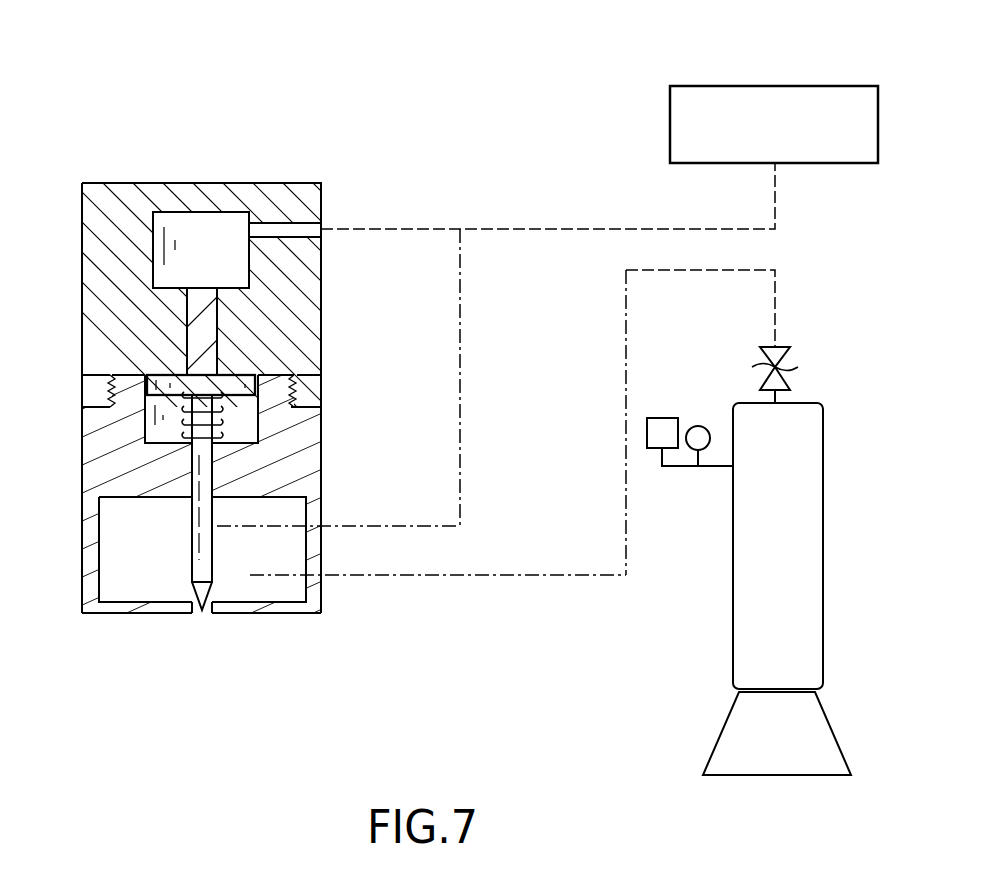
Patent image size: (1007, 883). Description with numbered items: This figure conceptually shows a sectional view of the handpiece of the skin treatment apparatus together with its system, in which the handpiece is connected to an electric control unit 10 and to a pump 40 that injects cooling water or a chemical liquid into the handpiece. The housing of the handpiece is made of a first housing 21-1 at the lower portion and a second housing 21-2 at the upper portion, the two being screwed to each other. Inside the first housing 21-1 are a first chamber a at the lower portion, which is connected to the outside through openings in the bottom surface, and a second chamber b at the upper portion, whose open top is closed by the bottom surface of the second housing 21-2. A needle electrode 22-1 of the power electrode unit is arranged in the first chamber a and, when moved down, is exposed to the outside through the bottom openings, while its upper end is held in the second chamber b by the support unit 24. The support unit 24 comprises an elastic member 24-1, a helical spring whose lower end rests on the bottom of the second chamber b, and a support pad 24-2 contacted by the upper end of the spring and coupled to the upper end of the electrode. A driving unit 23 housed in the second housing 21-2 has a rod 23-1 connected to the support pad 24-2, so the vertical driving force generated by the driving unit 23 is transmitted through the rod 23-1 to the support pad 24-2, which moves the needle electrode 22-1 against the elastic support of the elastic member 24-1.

The electric control unit 10 is at (678, 86).
The first housing 21-1 is at (97, 437).
The second housing 21-2 is at (92, 350).
The needle electrode 22-1 is at (208, 563).
The driving unit 23 is at (199, 220).
The rod 23-1 is at (207, 342).
The support unit 24 is at (290, 445).
The elastic member 24-1 is at (215, 428).
The support pad 24-2 is at (253, 390).
The pump 40 is at (733, 599).
The first chamber a is at (137, 580).
The second chamber b is at (163, 433).